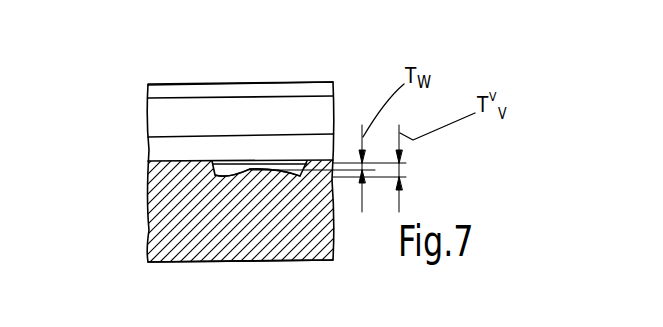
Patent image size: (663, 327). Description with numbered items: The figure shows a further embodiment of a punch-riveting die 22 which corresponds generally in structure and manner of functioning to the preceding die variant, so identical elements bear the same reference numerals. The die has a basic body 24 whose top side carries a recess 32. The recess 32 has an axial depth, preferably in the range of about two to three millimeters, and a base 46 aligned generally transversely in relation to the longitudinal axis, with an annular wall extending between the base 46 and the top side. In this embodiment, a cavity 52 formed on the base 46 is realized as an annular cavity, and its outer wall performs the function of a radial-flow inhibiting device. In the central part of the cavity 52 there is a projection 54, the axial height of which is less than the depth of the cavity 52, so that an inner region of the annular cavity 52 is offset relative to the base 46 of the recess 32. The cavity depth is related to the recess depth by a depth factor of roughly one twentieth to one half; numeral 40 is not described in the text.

The punch-riveting die 22 is at (350, 73).
The basic body 24 is at (192, 232).
The recess 32 is at (179, 122).
The intermediate layer 40 is at (213, 118).
The base 46 is at (182, 152).
The cavity 52 is at (217, 173).
The projection 54 is at (255, 182).